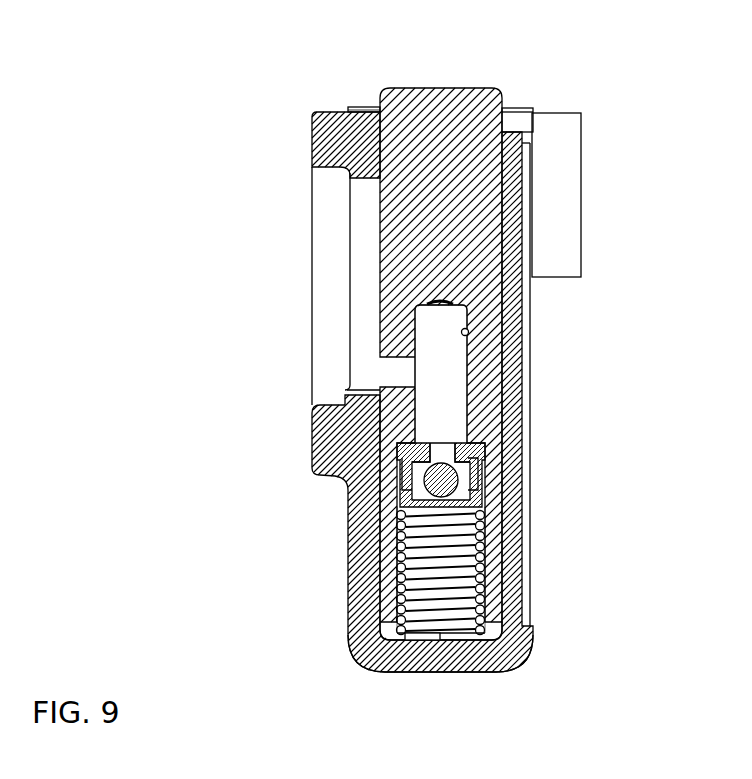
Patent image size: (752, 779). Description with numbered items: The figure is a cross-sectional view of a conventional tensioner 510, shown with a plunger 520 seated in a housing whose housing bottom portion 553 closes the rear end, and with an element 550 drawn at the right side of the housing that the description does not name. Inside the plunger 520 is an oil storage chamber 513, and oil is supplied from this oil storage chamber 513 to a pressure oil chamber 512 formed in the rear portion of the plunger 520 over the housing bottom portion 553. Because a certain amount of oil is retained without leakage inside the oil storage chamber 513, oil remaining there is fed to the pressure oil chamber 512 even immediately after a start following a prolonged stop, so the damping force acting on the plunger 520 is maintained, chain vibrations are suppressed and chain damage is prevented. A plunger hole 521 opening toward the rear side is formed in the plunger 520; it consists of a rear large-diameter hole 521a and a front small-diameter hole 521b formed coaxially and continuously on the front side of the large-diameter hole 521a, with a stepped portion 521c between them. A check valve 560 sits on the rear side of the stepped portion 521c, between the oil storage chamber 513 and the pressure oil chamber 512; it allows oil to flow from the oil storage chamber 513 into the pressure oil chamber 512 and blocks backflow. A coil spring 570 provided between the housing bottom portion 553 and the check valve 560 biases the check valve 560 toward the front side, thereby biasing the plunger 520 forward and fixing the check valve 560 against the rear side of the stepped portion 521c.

The tensioner 510 is at (245, 90).
The plunger 520 is at (453, 120).
The plate 550 is at (513, 192).
The housing bottom portion 553 is at (452, 657).
The check valve 560 is at (410, 462).
The coil spring 570 is at (397, 540).
The plunger hole 521 is at (676, 325).
The large-diameter hole 521a is at (468, 478).
The small-diameter hole 521b is at (472, 338).
The stepped portion 521c is at (482, 440).
The oil storage chamber 513 is at (456, 382).
The pressure oil chamber 512 is at (456, 574).